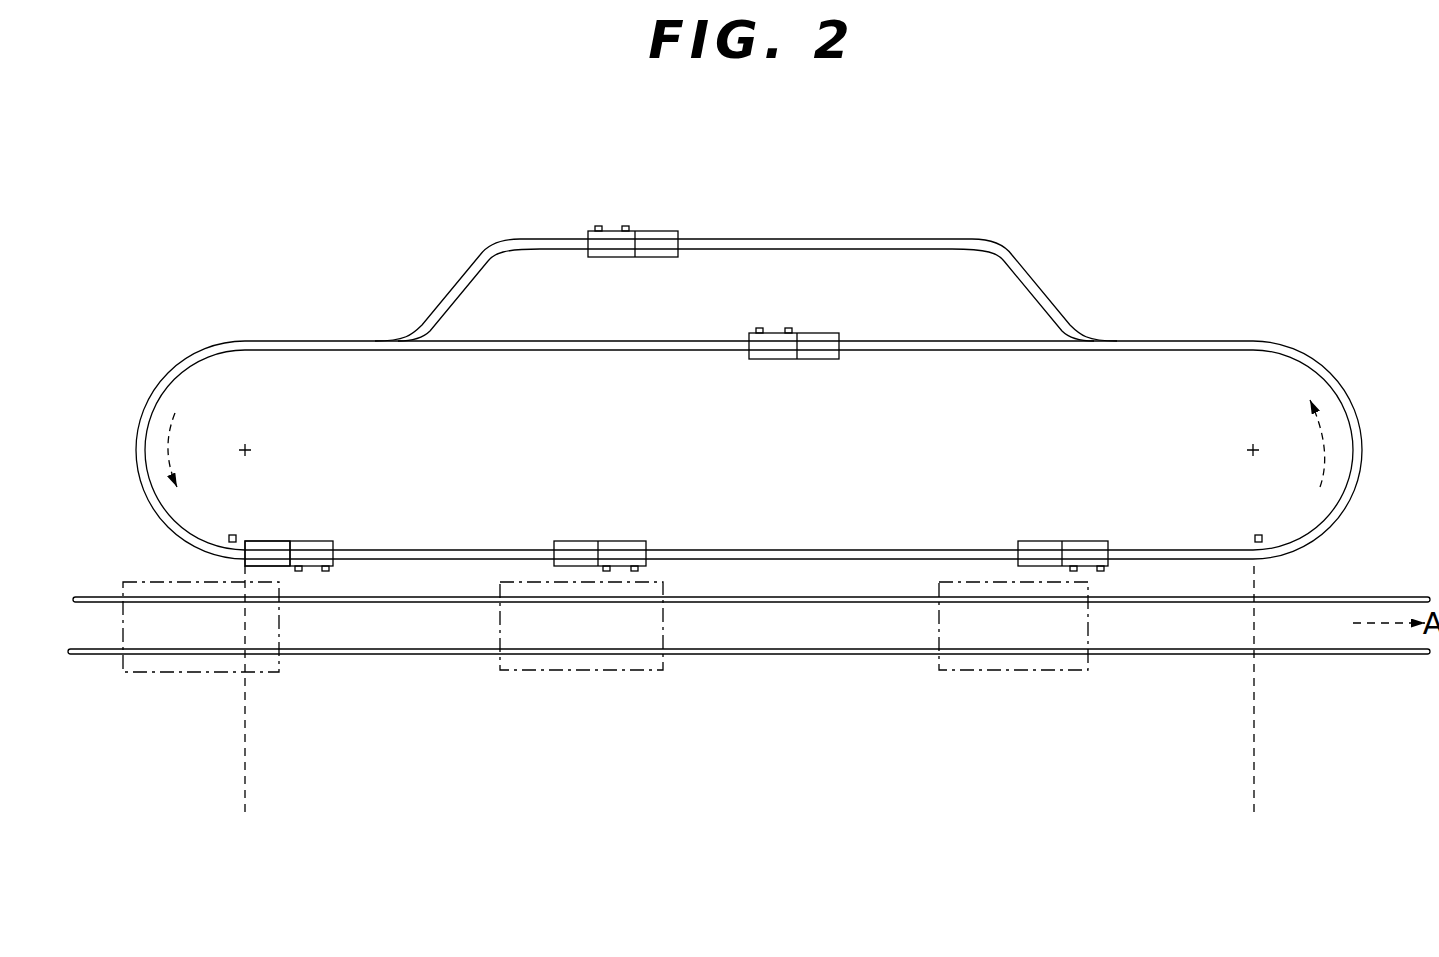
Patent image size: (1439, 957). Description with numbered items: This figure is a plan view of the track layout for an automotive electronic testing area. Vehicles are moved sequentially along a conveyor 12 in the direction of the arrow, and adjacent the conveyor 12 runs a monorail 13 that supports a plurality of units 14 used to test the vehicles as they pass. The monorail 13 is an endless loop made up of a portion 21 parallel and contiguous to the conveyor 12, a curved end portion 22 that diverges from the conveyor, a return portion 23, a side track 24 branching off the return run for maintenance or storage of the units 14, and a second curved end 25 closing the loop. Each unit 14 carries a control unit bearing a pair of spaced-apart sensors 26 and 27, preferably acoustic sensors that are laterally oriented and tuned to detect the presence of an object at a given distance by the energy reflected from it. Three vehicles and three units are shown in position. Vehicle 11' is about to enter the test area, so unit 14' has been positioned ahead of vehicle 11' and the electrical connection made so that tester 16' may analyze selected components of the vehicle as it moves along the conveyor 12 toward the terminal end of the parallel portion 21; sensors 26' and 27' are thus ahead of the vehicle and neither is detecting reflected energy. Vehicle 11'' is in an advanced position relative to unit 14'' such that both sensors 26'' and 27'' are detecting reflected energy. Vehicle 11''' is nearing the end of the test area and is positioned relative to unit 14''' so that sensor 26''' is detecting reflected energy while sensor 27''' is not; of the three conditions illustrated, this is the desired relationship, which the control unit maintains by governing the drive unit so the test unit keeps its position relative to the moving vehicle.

The monorail 13 is at (273, 328).
The second curved end 25 is at (150, 393).
The curved end portion 22 is at (1358, 455).
The return portion 23 is at (496, 345).
The parallel portion 21 is at (409, 549).
The side track 24 is at (790, 240).
The unit 14 is at (713, 288).
The sensor 27 is at (733, 303).
The sensor 26 is at (718, 279).
The tester 16' is at (246, 518).
The unit 14' is at (289, 518).
The sensor 26' is at (315, 608).
The sensor 27' is at (361, 608).
The unit 14'' is at (600, 518).
The sensor 26'' is at (603, 608).
The sensor 27'' is at (698, 608).
The unit 14''' is at (1063, 518).
The sensor 26''' is at (1028, 608).
The sensor 27''' is at (1150, 608).
The conveyor 12 is at (375, 657).
The vehicle 11' is at (201, 675).
The vehicle 11'' is at (581, 675).
The vehicle 11''' is at (1013, 675).